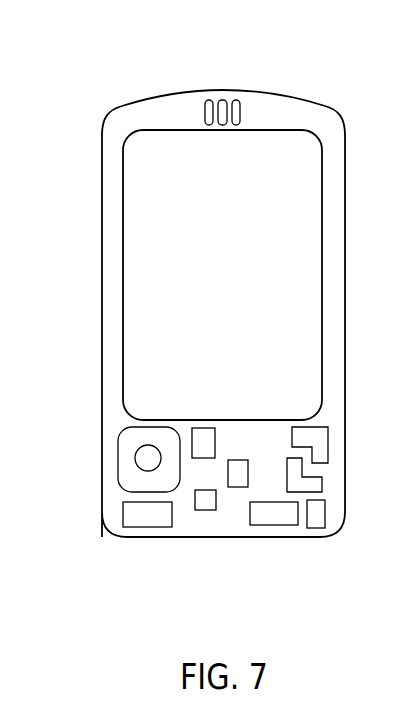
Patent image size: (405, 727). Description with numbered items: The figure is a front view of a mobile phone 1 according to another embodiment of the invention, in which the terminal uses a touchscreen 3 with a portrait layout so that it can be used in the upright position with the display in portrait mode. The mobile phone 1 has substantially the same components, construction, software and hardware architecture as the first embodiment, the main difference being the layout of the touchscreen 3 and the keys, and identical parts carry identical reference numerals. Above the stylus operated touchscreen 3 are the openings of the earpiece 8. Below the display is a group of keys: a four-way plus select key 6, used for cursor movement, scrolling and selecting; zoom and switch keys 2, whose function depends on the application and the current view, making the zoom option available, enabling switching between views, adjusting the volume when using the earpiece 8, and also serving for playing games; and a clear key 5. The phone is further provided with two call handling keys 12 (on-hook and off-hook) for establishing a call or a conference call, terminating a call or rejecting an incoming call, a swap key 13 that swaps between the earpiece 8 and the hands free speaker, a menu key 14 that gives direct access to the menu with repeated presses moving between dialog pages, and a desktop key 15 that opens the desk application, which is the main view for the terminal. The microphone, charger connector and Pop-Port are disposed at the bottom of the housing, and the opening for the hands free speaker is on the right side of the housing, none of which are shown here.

The mobile phone 1 is at (116, 87).
The zoom and switch keys 2 is at (310, 483).
The touch screen 3 is at (305, 303).
The clear key 5 is at (316, 514).
The four-way plus select key 6 is at (150, 460).
The earpiece 8 is at (221, 100).
The call handling keys 12 is at (138, 521).
The swap key 13 is at (205, 505).
The menu key 14 is at (203, 453).
The desktop key 15 is at (235, 482).